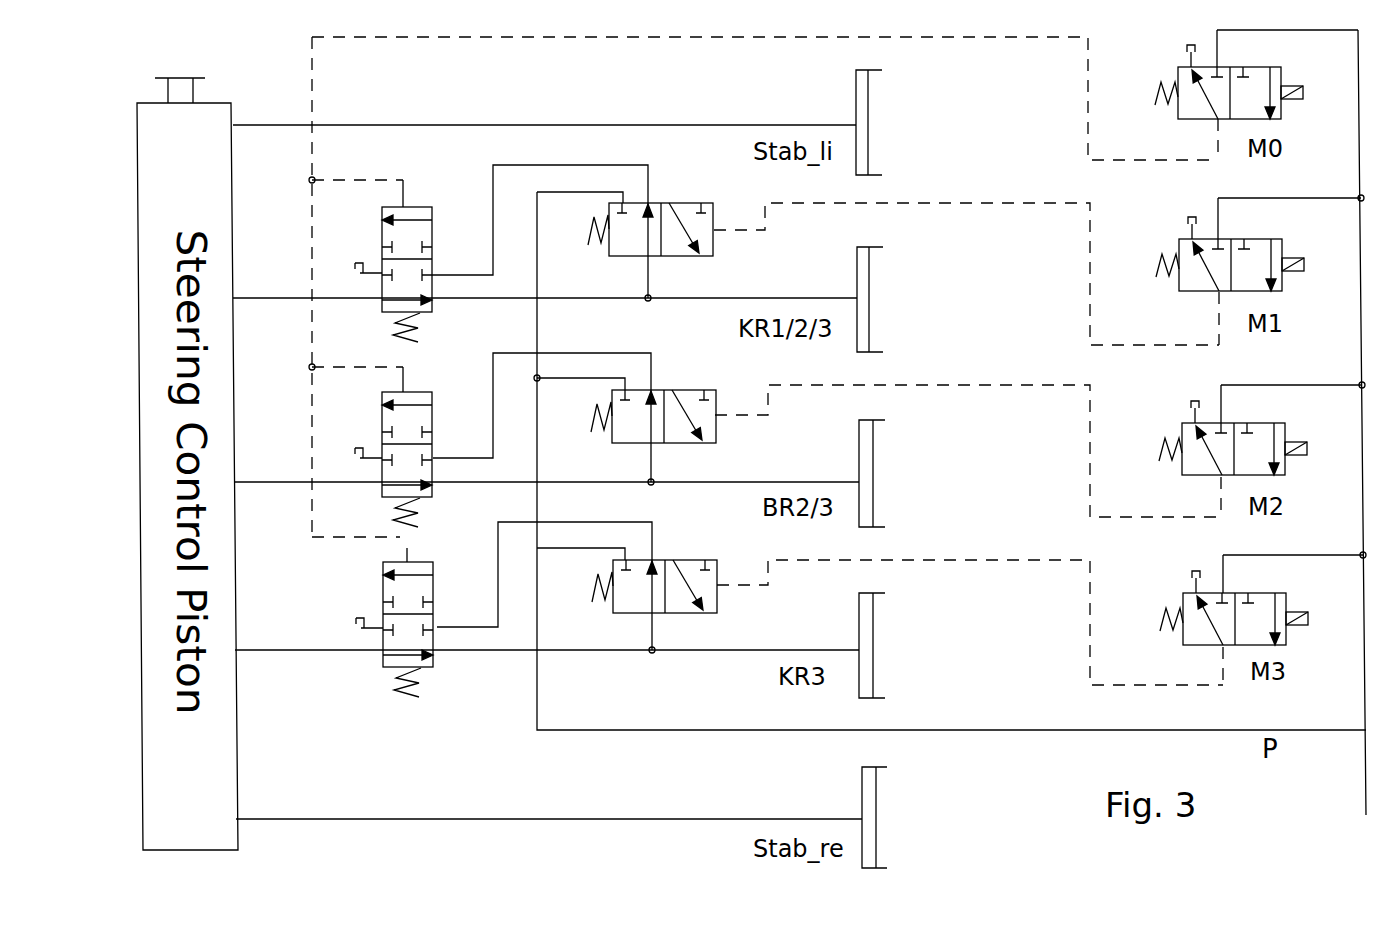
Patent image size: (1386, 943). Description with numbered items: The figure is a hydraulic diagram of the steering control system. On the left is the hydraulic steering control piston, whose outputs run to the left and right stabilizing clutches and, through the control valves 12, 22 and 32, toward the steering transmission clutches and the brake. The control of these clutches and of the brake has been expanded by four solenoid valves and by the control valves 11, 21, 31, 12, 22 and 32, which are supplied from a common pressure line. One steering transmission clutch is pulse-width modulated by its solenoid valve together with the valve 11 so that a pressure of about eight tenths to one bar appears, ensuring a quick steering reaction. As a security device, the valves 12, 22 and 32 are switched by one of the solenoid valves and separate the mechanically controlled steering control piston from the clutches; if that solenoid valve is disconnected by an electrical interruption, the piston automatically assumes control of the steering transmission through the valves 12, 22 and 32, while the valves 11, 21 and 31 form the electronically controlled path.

The control valve 11 is at (635, 237).
The control valve 12 is at (387, 268).
The control valve 21 is at (636, 424).
The control valve 22 is at (390, 454).
The control valve 31 is at (639, 589).
The control valve 32 is at (391, 626).